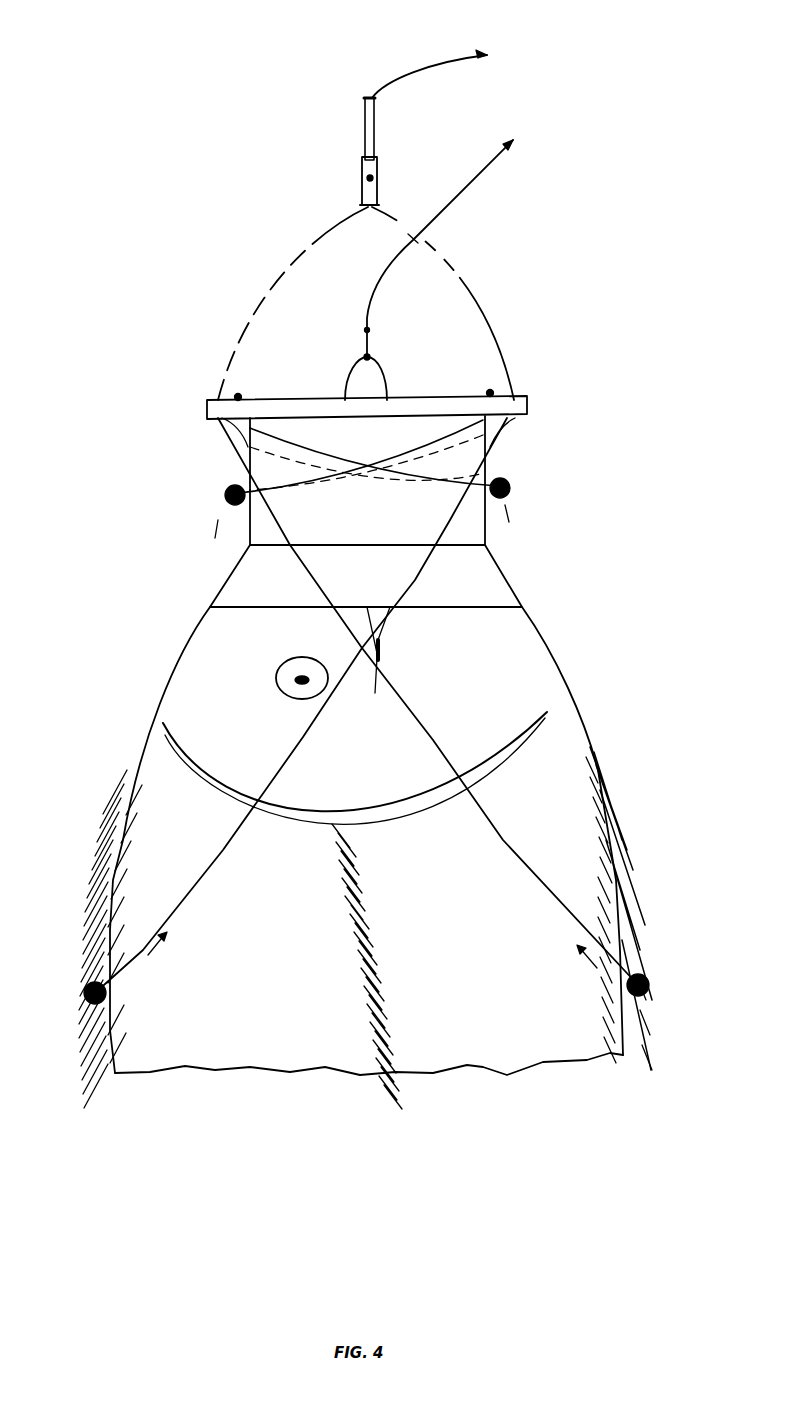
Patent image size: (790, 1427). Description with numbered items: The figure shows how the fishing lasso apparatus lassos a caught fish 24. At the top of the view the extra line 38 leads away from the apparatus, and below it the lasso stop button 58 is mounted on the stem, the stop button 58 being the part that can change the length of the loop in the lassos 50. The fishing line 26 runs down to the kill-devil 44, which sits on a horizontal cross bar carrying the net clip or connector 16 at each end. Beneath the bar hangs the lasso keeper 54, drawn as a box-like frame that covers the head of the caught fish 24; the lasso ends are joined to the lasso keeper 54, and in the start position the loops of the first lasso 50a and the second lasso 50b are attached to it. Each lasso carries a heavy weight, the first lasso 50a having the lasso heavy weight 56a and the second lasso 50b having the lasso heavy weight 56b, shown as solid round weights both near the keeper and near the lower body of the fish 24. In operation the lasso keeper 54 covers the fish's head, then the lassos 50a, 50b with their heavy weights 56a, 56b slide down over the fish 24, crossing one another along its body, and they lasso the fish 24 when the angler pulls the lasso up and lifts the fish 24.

The net clip or connector 16 is at (240, 396).
The caught fish 24 is at (175, 664).
The fishing line 26 is at (478, 173).
The extra line 38 is at (440, 63).
The kill-devil 44 is at (386, 387).
The lassos 50 is at (364, 124).
The first lasso 50a is at (232, 378).
The second lasso 50b is at (508, 380).
The lasso keeper 54 is at (208, 410).
The lasso heavy weight 56a is at (511, 486).
The lasso heavy weight 56b is at (226, 496).
The lasso stop button 58 is at (375, 176).